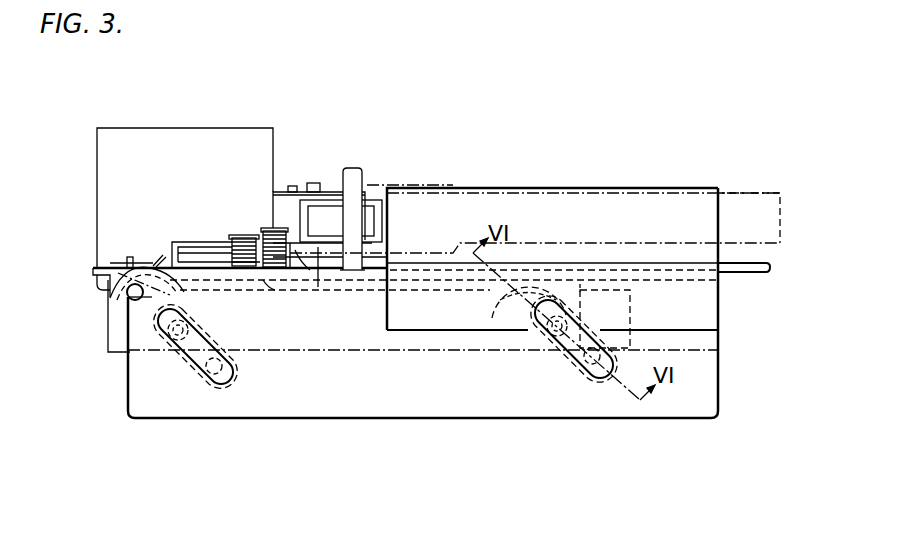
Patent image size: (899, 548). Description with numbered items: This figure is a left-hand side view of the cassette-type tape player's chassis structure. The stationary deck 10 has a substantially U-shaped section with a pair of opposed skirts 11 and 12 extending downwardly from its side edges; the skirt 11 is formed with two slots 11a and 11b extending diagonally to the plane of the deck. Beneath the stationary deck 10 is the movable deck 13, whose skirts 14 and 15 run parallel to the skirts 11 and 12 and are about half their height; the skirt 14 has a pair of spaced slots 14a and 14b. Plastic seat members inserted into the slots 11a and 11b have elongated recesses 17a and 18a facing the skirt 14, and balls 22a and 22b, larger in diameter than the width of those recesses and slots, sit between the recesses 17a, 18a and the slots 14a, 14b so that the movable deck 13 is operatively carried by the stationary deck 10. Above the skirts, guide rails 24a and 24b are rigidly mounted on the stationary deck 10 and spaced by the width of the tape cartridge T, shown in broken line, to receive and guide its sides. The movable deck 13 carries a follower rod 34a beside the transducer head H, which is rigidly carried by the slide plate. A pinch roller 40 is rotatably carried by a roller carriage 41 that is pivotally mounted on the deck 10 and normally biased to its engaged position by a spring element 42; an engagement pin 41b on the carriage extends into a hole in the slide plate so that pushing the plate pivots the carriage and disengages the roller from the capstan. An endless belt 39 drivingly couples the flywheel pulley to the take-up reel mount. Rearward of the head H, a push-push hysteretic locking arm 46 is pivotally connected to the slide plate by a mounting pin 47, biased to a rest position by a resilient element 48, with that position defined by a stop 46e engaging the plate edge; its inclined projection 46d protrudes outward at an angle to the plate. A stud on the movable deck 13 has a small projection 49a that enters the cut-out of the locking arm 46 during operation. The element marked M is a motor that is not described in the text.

The stationary deck 10 is at (93, 267).
The skirt 11 is at (441, 350).
The skirt 12 is at (698, 398).
The slot 11a is at (212, 385).
The slot 11b is at (600, 370).
The movable deck 13 is at (427, 293).
The skirt 14 is at (106, 329).
The skirt 15 is at (118, 337).
The slot 14a is at (130, 308).
The slot 14b is at (500, 300).
The elongated recess 17a is at (166, 365).
The elongated recess 18a is at (567, 380).
The ball 22a is at (120, 383).
The ball 22b is at (545, 350).
The guide rail 24a is at (578, 200).
The guide rail 24b is at (547, 203).
The follower rod 34a is at (357, 166).
The endless belt 39 is at (105, 292).
The pinch roller 40 is at (352, 275).
The roller carriage 41 is at (318, 250).
The engagement pin 41b is at (297, 262).
The spring element 42 is at (265, 285).
The locking arm 46 is at (190, 252).
The inclined projection 46d is at (160, 257).
The stop 46e is at (228, 236).
The mounting pin 47 is at (275, 190).
The resilient element 48 is at (263, 238).
The projection 49a is at (140, 256).
The transducer head H is at (380, 187).
The motor M is at (98, 142).
The tape cartridge T is at (750, 193).